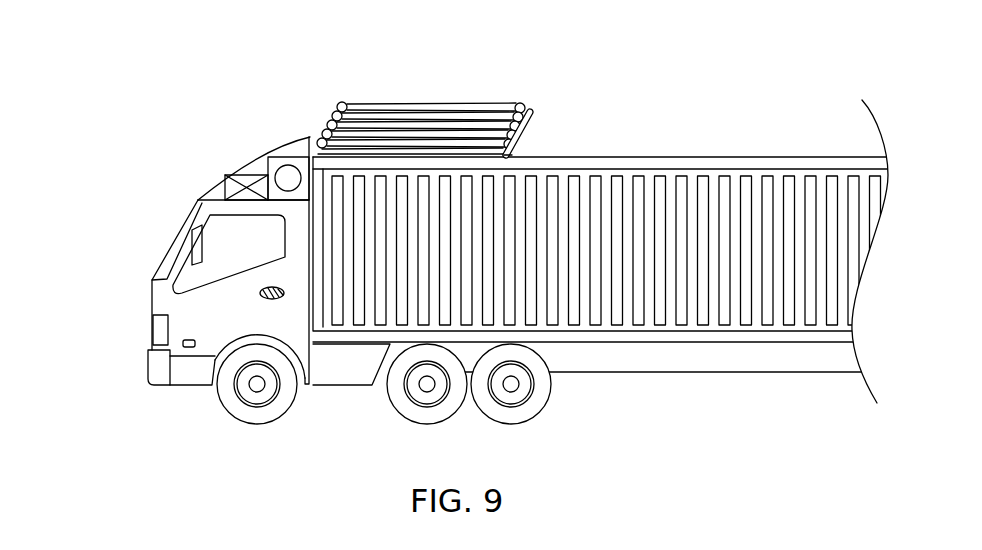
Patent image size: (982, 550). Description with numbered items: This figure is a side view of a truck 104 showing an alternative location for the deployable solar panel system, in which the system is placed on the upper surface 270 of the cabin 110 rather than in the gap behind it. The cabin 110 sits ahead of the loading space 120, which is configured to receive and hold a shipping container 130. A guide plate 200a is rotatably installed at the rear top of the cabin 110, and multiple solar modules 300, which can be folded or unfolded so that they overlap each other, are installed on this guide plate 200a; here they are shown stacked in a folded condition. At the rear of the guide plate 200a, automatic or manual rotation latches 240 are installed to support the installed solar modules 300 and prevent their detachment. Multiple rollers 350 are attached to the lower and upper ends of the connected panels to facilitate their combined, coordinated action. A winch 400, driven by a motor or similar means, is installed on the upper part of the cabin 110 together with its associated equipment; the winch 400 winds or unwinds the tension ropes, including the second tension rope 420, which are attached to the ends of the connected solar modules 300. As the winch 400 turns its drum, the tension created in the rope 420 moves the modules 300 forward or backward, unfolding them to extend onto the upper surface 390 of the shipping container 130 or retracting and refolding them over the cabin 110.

The truck 104 is at (136, 326).
The cabin 110 is at (170, 246).
The loading space 120 is at (705, 373).
The shipping container 130 is at (735, 157).
The guide plate 200a is at (514, 152).
The rotation latches 240 is at (536, 114).
The upper surface of the cabin 270 is at (197, 195).
The solar modules 300 is at (445, 101).
The rollers 350 is at (343, 101).
The upper surface of the shipping container 390 is at (781, 154).
The winch 400 is at (263, 163).
The second tension rope 420 is at (302, 153).